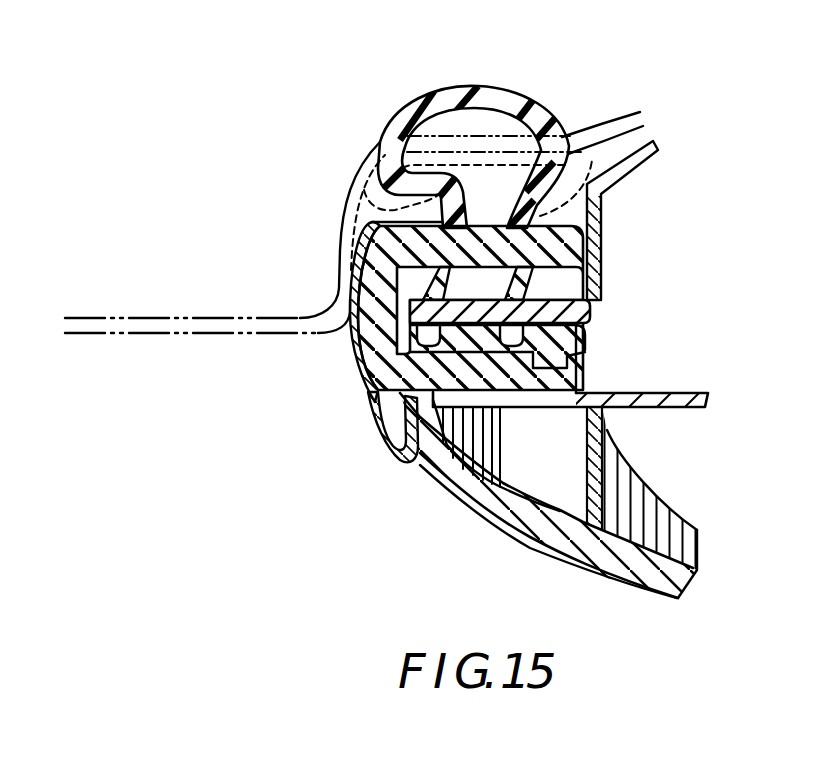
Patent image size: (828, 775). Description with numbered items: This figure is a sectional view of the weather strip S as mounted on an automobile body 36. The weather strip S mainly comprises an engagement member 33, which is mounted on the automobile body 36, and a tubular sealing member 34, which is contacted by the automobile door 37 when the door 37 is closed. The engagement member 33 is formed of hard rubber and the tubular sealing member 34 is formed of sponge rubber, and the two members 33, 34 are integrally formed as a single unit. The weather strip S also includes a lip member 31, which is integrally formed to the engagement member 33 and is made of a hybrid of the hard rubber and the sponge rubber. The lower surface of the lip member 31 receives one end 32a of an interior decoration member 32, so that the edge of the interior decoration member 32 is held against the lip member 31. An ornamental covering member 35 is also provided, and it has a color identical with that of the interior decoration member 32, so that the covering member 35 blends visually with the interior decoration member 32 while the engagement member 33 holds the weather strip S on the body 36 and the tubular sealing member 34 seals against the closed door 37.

The lip member 31 is at (384, 444).
The interior decoration member 32 is at (637, 572).
The end of interior decoration member 32a is at (423, 418).
The engagement member 33 is at (590, 292).
The tubular sealing member 34 is at (503, 98).
The ornamental covering member 35 is at (350, 310).
The automobile body 36 is at (586, 202).
The automobile door 37 is at (157, 323).
The weather strip S is at (368, 141).